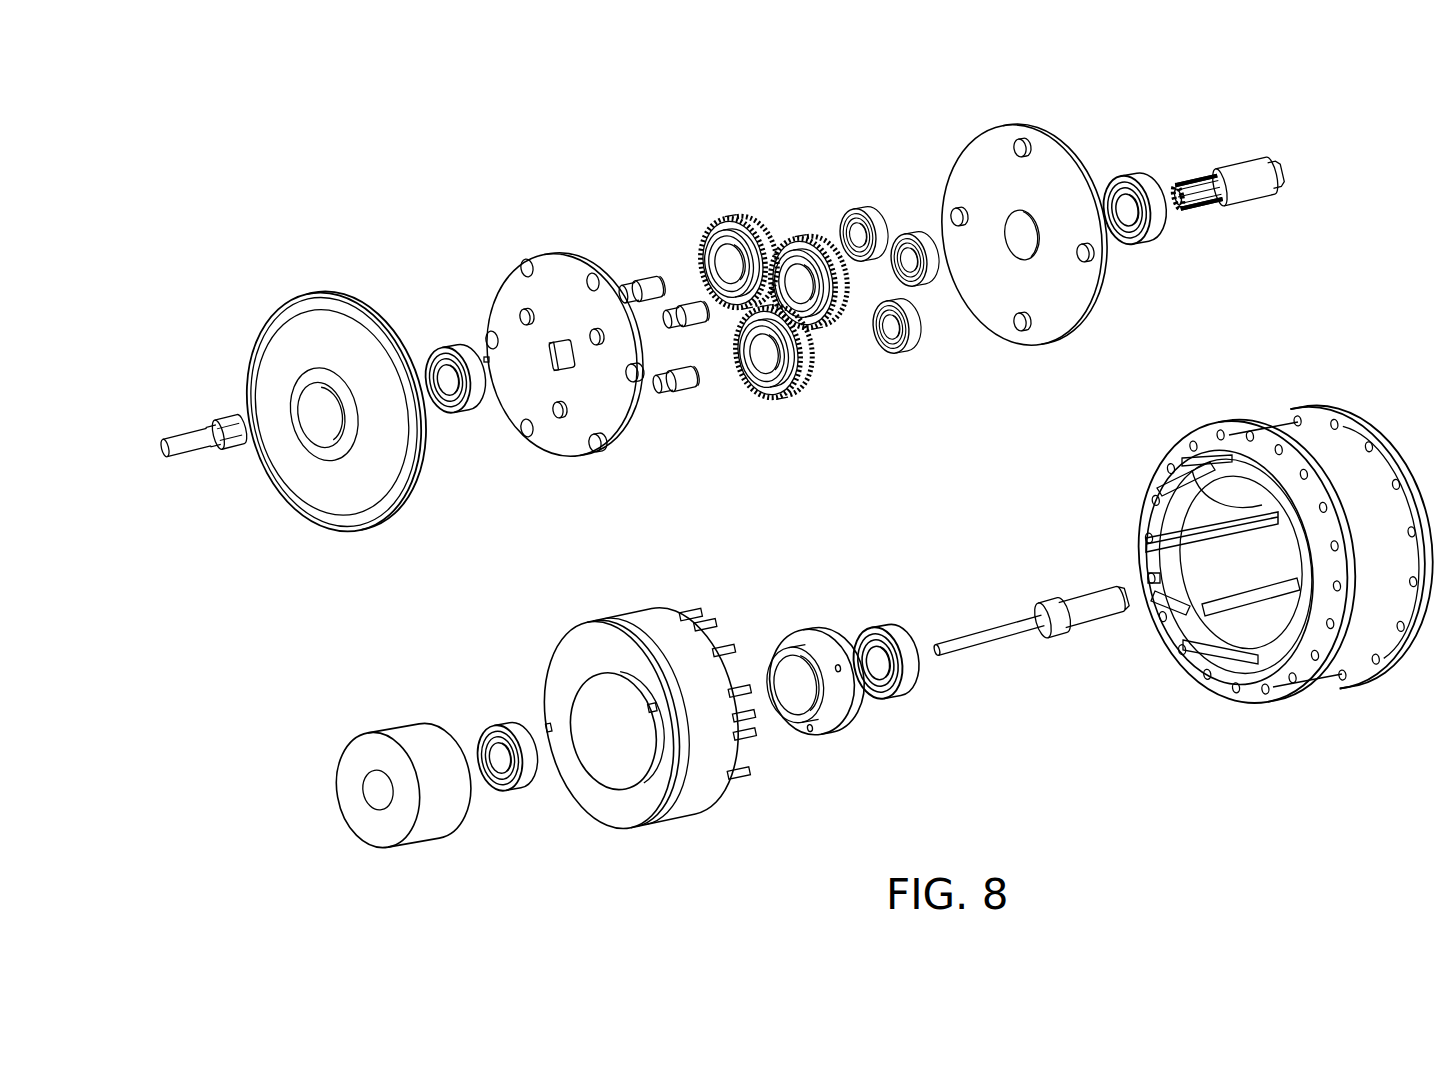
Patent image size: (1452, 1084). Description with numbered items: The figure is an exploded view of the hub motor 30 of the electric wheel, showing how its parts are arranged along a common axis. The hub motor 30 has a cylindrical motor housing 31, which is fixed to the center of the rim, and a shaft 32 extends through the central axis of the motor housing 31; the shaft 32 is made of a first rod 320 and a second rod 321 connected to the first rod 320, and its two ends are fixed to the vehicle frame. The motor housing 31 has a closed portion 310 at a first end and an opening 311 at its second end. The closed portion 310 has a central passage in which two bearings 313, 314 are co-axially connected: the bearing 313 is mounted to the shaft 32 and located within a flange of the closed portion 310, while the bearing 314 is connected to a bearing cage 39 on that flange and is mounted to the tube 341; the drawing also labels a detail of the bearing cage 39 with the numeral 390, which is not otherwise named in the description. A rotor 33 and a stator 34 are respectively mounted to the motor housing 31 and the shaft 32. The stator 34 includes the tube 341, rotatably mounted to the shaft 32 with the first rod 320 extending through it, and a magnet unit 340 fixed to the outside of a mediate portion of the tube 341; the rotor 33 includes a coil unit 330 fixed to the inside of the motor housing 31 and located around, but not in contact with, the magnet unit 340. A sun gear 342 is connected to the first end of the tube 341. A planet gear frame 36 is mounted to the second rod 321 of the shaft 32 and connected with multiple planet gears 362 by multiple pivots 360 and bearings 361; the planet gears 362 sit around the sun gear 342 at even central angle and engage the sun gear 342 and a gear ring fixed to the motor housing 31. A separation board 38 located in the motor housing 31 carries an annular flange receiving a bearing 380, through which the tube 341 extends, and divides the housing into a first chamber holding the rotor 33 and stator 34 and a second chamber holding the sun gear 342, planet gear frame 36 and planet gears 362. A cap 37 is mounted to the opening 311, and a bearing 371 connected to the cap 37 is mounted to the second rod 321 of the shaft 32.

The hub motor 30 is at (1090, 703).
The motor housing 31 is at (1277, 551).
The closed portion 310 is at (1195, 490).
The opening 311 is at (1222, 687).
The bearing 313 is at (907, 677).
The bearing 314 is at (507, 727).
The shaft 32 is at (1001, 617).
The first rod 320 is at (1053, 596).
The second rod 321 is at (212, 423).
The rotor 33 is at (697, 780).
The coil unit 330 is at (595, 687).
The stator 34 is at (430, 823).
The magnet unit 340 is at (402, 737).
The tube 341 is at (1240, 170).
The sun gear 342 is at (1200, 210).
The planet gear frame 36 is at (556, 270).
The pivots 360 is at (692, 307).
The bearings 361 is at (913, 240).
The planet gears 362 is at (762, 228).
The cap 37 is at (340, 318).
The bearing 371 is at (465, 418).
The separation board 38 is at (1085, 292).
The bearing 380 is at (1137, 172).
The bearing cage 39 is at (807, 637).
The bore 390 is at (808, 692).